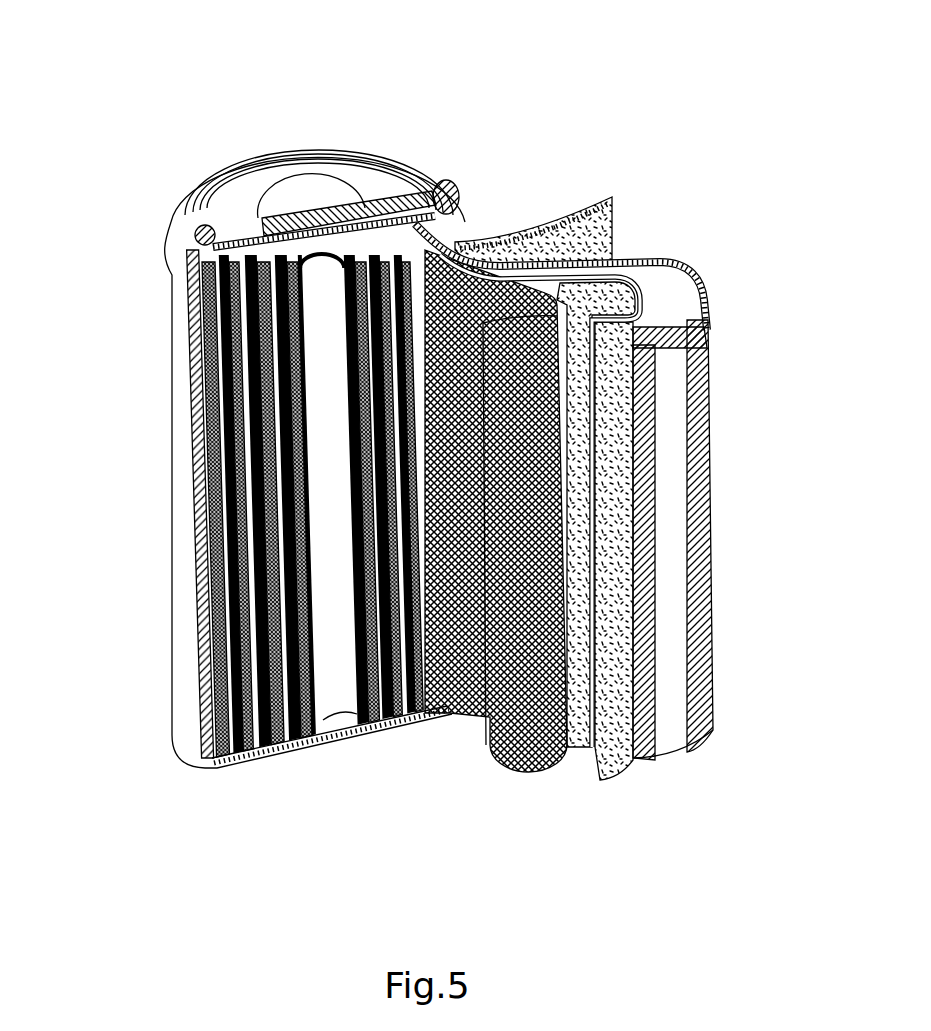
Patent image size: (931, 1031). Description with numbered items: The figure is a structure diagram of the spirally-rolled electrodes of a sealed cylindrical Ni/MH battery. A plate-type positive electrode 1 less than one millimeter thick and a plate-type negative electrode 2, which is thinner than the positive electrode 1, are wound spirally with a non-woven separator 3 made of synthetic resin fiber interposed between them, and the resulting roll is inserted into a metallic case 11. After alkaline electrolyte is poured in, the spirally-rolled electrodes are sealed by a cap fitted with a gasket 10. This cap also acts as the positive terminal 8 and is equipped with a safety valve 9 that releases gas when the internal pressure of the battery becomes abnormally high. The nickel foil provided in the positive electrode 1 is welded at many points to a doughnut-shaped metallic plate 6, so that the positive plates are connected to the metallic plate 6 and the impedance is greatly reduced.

The positive electrode 1 is at (557, 426).
The negative electrode 2 is at (680, 463).
The separator 3 is at (602, 230).
The metallic plate 6 is at (466, 206).
The positive terminal 8 is at (305, 190).
The safety valve 9 is at (348, 192).
The gasket 10 is at (172, 231).
The metallic case 11 is at (185, 601).